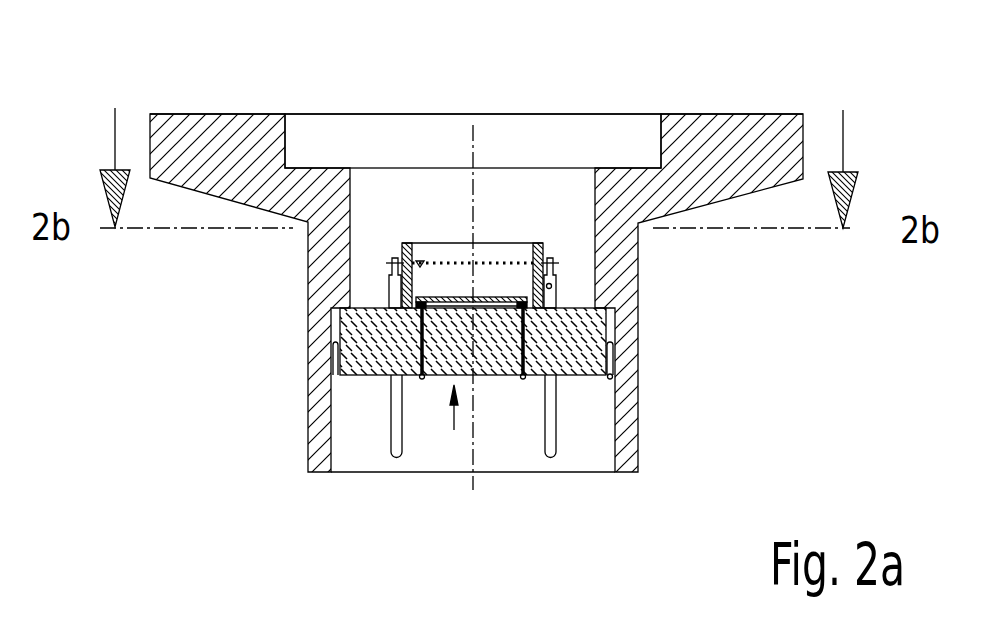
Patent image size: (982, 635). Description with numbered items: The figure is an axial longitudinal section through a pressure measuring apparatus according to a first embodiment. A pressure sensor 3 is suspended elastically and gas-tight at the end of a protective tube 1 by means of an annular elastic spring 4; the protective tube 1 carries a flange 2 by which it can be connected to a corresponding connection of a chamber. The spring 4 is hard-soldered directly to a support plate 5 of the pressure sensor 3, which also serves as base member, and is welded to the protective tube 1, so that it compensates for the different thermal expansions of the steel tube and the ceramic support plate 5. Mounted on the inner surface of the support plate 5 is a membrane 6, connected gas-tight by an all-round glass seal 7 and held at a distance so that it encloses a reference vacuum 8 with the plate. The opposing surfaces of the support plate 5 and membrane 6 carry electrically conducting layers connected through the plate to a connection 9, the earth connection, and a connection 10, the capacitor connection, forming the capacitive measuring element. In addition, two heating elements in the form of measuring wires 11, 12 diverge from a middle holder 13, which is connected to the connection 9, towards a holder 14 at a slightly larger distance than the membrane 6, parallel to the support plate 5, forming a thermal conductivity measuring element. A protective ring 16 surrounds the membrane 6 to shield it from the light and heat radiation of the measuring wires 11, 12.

The protective tube 1 is at (630, 456).
The flange 2 is at (746, 120).
The pressure sensor 3 is at (456, 425).
The annular elastic spring 4 is at (609, 379).
The support plate 5 is at (361, 368).
The membrane 6 is at (492, 297).
The glass seal 7 is at (423, 302).
The reference vacuum 8 is at (505, 305).
The connection 9 is at (422, 379).
The connection 10 is at (523, 379).
The measuring wire 11 is at (420, 261).
The measuring wire 12 is at (556, 264).
The middle holder 13 is at (552, 288).
The holder 14 is at (390, 258).
The protective ring 16 is at (541, 242).